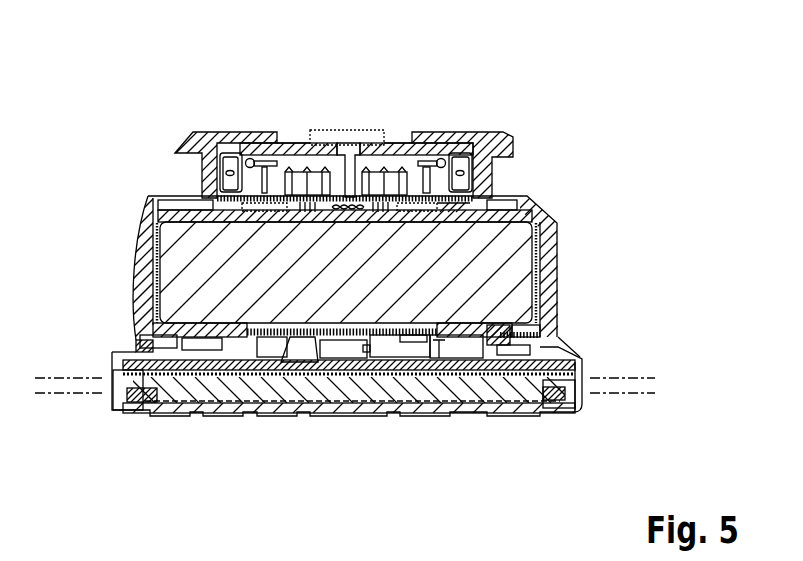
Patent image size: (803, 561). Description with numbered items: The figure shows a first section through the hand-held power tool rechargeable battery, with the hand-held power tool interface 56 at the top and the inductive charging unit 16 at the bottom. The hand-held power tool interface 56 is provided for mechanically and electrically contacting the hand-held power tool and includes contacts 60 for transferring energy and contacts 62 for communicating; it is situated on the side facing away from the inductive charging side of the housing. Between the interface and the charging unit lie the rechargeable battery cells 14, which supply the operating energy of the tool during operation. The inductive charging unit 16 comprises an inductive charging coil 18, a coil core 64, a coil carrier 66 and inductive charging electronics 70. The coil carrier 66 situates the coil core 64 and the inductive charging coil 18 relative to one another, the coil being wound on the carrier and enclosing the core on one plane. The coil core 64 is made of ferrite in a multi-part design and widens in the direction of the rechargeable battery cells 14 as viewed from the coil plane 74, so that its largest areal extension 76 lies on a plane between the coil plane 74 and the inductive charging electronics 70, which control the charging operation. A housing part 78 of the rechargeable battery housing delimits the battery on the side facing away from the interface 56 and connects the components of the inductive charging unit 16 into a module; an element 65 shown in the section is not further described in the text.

The rechargeable battery cells 14 is at (545, 215).
The inductive charging unit 16 is at (116, 330).
The inductive charging coil 18 is at (553, 412).
The hand-held power tool interface 56 is at (510, 104).
The contacts for transferring energy 60 is at (228, 152).
The contacts for communicating 62 is at (300, 178).
The coil core 64 is at (187, 420).
The contact element 65 is at (292, 414).
The coil carrier 66 is at (582, 370).
The inductive charging electronics 70 is at (406, 420).
The coil plane 74 is at (640, 396).
The largest areal extension 76 is at (640, 375).
The housing part 78 is at (320, 420).